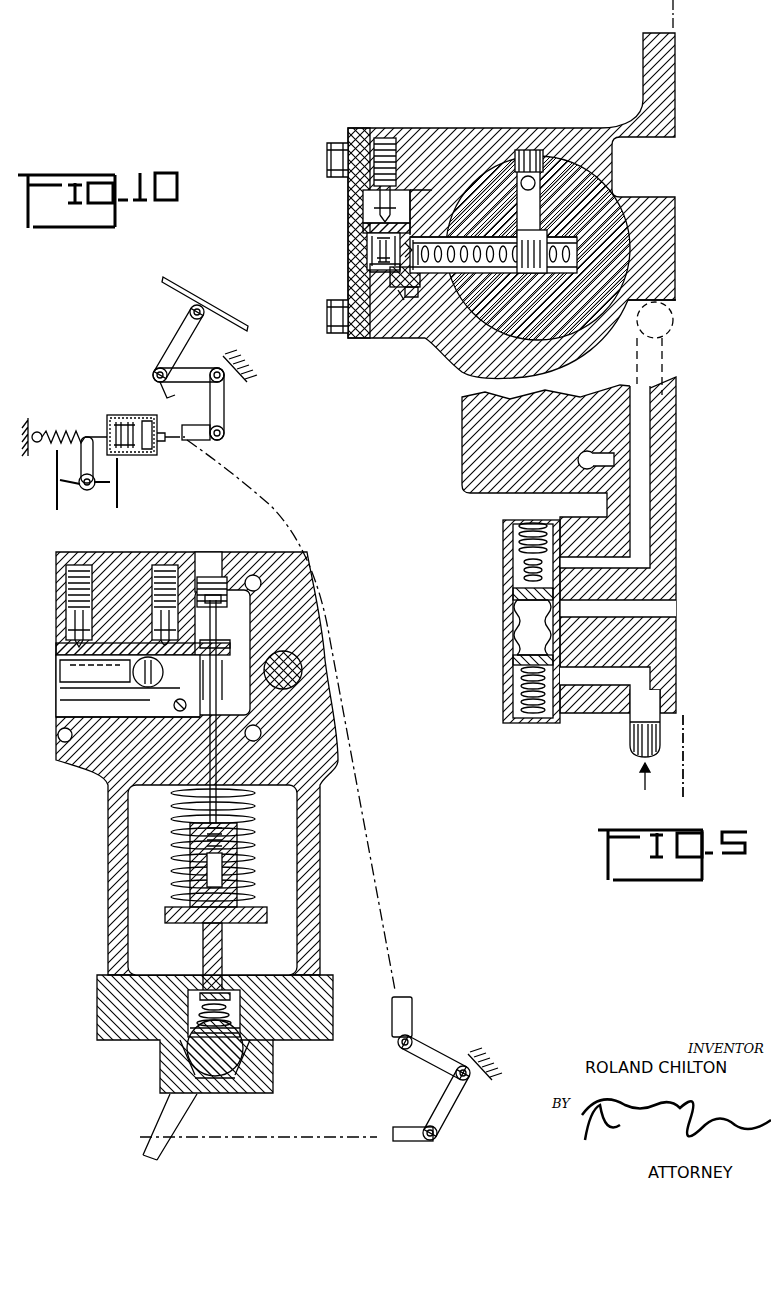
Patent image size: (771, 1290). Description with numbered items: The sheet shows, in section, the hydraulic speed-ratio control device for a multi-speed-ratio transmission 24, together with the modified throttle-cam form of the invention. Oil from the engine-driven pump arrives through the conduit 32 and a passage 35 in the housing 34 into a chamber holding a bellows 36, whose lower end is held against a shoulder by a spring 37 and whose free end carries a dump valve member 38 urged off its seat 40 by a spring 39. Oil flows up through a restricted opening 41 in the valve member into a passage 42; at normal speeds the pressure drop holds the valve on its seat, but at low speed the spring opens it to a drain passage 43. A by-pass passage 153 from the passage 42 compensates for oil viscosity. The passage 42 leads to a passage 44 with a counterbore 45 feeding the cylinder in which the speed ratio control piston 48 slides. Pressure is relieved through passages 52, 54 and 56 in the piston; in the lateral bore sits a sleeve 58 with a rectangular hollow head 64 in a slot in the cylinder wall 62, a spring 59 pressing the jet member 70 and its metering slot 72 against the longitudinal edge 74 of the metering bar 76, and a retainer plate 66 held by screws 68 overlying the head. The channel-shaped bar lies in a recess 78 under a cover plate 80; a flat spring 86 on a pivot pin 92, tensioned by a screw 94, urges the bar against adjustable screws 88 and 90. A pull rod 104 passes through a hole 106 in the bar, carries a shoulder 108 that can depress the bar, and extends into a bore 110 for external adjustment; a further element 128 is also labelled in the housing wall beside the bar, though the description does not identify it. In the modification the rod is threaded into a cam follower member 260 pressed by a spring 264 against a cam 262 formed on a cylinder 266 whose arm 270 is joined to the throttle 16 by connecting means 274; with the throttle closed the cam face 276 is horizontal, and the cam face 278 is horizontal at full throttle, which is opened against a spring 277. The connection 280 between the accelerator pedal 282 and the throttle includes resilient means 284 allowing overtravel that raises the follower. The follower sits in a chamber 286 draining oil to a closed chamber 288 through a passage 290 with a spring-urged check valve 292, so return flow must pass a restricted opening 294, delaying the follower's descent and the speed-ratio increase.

In FIG. 10, the throttle 16 is at (106, 482).
In FIG. 5, the multi-speed-ratio transmission 24 is at (684, 735).
In FIG. 5, the conduit 32 is at (631, 740).
In FIG. 5, the housing 34 is at (473, 135).
In FIG. 5, the passage 35 is at (650, 677).
In FIG. 5, the bellows 36 is at (512, 633).
In FIG. 5, the spring 37 is at (513, 680).
In FIG. 5, the valve member 38 is at (512, 600).
In FIG. 5, the spring 39 is at (513, 562).
In FIG. 5, the seat 40 is at (513, 585).
In FIG. 5, the restricted opening 41 is at (532, 627).
In FIG. 5, the passage 42 is at (640, 562).
In FIG. 5, the drain passage 43 is at (668, 612).
In FIG. 5, the passage 44 is at (675, 328).
In FIG. 5, the counterbore 45 is at (677, 303).
In FIG. 5, the speed ratio control piston 48 is at (617, 255).
In FIG. 5, the passage 52 is at (536, 190).
In FIG. 5, the passage 54 is at (537, 220).
In FIG. 5, the passage 56 is at (478, 275).
In FIG. 5, the sleeve 58 is at (470, 240).
In FIG. 5, the spring 59 is at (532, 247).
In FIG. 5, the cylinder wall 62 is at (418, 200).
In FIG. 5, the rectangular hollow head 64 is at (427, 282).
In FIG. 5, the retainer plate 66 is at (390, 300).
In FIG. 10, the retainer plate 66 is at (62, 712).
In FIG. 5, the screws 68 is at (397, 292).
In FIG. 10, the screws 68 is at (174, 705).
In FIG. 5, the jet member 70 is at (425, 236).
In FIG. 5, the metering slot 72 is at (418, 242).
In FIG. 10, the metering slot 72 is at (146, 688).
In FIG. 5, the longitudinal edge 74 is at (395, 270).
In FIG. 10, the longitudinal edge 74 is at (220, 690).
In FIG. 5, the metering bar 76 is at (365, 228).
In FIG. 10, the metering bar 76 is at (123, 635).
In FIG. 5, the recess 78 is at (370, 198).
In FIG. 10, the recess 78 is at (248, 645).
In FIG. 5, the cover plate 80 is at (350, 135).
In FIG. 5, the flat spring 86 is at (372, 255).
In FIG. 10, the flat spring 86 is at (65, 682).
In FIG. 5, the adjustable screw 88 is at (388, 138).
In FIG. 10, the adjustable screw 88 is at (75, 620).
In FIG. 10, the adjustable screw 90 is at (165, 627).
In FIG. 5, the pivot pin 92 is at (372, 268).
In FIG. 5, the screw 94 is at (370, 243).
In FIG. 10, the pull rod 104 is at (210, 758).
In FIG. 10, the hole 106 is at (222, 660).
In FIG. 10, the shoulder 108 is at (226, 604).
In FIG. 10, the bore 110 is at (210, 560).
In FIG. 10, the passage 128 is at (302, 668).
In FIG. 5, the by-pass passage 153 is at (617, 456).
In FIG. 10, the cam follower member 260 is at (190, 980).
In FIG. 10, the cam 262 is at (192, 1072).
In FIG. 10, the spring 264 is at (172, 855).
In FIG. 10, the cylinder 266 is at (250, 1050).
In FIG. 10, the arm 270 is at (165, 1126).
In FIG. 10, the connecting means 274 is at (380, 934).
In FIG. 10, the cam face 276 is at (188, 1022).
In FIG. 10, the spring 277 is at (66, 407).
In FIG. 10, the cam face 278 is at (255, 1070).
In FIG. 10, the connection 280 is at (192, 440).
In FIG. 10, the accelerator pedal 282 is at (170, 286).
In FIG. 10, the resilient means 284 is at (138, 393).
In FIG. 10, the chamber 286 is at (140, 893).
In FIG. 10, the closed chamber 288 is at (188, 1048).
In FIG. 10, the passage 290 is at (225, 995).
In FIG. 10, the check valve 292 is at (230, 1000).
In FIG. 10, the restricted opening 294 is at (210, 995).